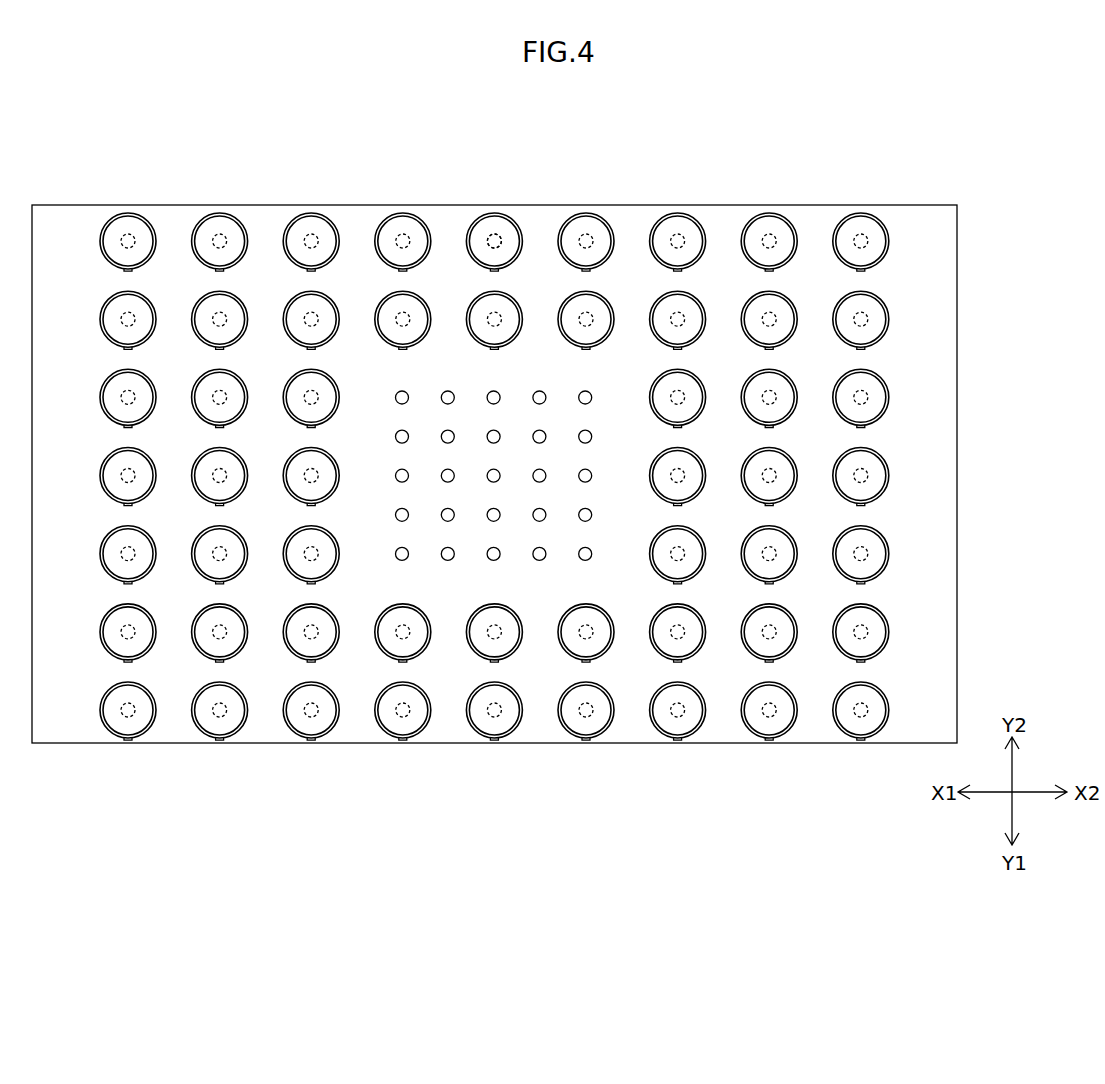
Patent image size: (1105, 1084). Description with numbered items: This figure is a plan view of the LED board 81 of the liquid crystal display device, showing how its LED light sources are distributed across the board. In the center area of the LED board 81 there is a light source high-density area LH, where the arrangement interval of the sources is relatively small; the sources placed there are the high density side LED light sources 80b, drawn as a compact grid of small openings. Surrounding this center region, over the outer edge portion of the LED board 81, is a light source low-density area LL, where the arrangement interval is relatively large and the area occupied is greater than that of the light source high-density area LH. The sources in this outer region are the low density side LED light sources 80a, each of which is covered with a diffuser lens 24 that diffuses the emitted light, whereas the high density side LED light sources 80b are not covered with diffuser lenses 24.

The diffuser lens 24 is at (467, 232).
The low density side LED light source 80a is at (501, 240).
The high density side LED light source 80b is at (396, 393).
The LED board 81 is at (764, 184).
The light source high-density area LH is at (612, 385).
The light source low-density area LL is at (917, 256).